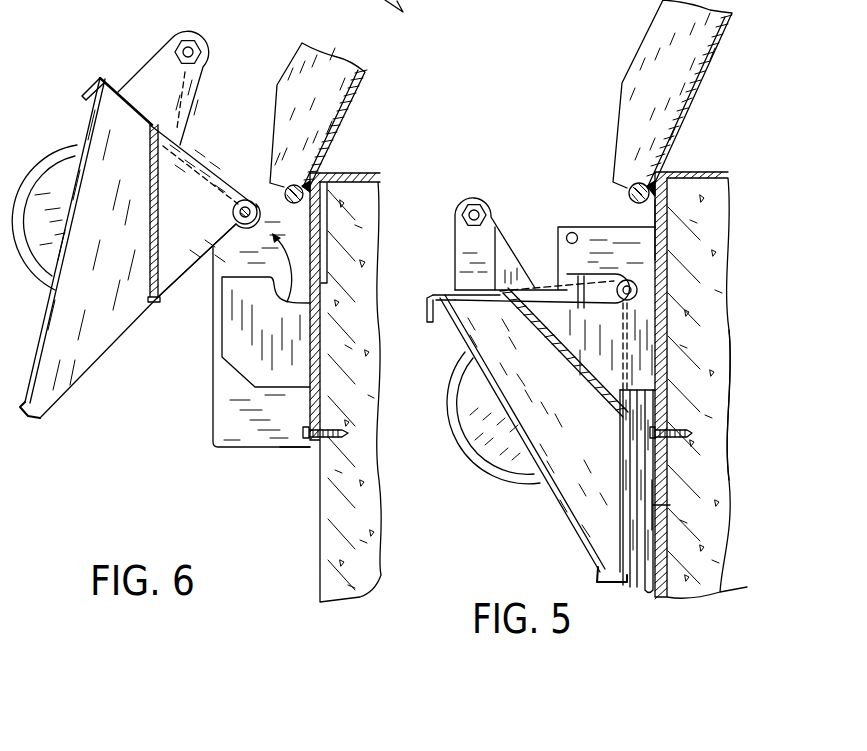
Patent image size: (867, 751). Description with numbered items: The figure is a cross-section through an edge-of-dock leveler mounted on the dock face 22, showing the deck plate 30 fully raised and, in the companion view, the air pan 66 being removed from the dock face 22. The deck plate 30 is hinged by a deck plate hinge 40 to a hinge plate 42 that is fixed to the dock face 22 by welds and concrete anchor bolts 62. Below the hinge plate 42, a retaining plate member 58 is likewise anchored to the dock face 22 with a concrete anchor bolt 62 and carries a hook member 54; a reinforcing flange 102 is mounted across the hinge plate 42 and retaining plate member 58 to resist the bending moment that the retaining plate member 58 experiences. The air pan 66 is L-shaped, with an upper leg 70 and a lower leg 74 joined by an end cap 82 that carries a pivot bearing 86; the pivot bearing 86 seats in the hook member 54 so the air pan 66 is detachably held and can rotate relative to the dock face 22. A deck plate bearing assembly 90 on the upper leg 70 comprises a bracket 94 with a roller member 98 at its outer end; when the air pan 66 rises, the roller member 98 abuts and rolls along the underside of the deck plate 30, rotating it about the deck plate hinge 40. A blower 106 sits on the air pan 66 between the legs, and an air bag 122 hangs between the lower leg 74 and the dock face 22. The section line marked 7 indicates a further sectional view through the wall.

In FIG. 6, the dock face 22 is at (320, 558).
In FIG. 5, the dock face 22 is at (733, 578).
In FIG. 6, the deck plate 30 is at (357, 97).
In FIG. 5, the deck plate 30 is at (706, 79).
In FIG. 6, the deck plate hinge 40 is at (303, 184).
In FIG. 5, the deck plate hinge 40 is at (638, 182).
In FIG. 6, the hinge plate 42 is at (328, 218).
In FIG. 5, the hinge plate 42 is at (653, 220).
In FIG. 6, the hook member 54 is at (247, 358).
In FIG. 5, the hook member 54 is at (620, 390).
In FIG. 6, the retaining plate member 58 is at (298, 410).
In FIG. 5, the retaining plate member 58 is at (663, 365).
In FIG. 6, the concrete anchor bolt 62 is at (340, 433).
In FIG. 5, the concrete anchor bolt 62 is at (676, 425).
In FIG. 6, the air pan 66 is at (82, 398).
In FIG. 5, the air pan 66 is at (537, 500).
In FIG. 6, the upper leg 70 is at (195, 152).
In FIG. 5, the upper leg 70 is at (470, 292).
In FIG. 6, the lower leg 74 is at (128, 328).
In FIG. 5, the lower leg 74 is at (598, 543).
In FIG. 6, the end cap 82 is at (176, 262).
In FIG. 5, the end cap 82 is at (553, 274).
In FIG. 6, the pivot bearing 86 is at (246, 199).
In FIG. 5, the pivot bearing 86 is at (660, 290).
In FIG. 6, the deck plate bearing assembly 90 is at (142, 52).
In FIG. 5, the deck plate bearing assembly 90 is at (508, 209).
In FIG. 6, the bracket 94 is at (137, 90).
In FIG. 5, the bracket 94 is at (450, 292).
In FIG. 6, the roller member 98 is at (206, 46).
In FIG. 5, the roller member 98 is at (488, 198).
In FIG. 6, the reinforcing flange 102 is at (232, 433).
In FIG. 5, the reinforcing flange 102 is at (727, 248).
In FIG. 6, the blower 106 is at (78, 148).
In FIG. 5, the blower 106 is at (490, 438).
In FIG. 5, the air bag 122 is at (655, 505).
In FIG. 5, the section view indicator 7 is at (680, 182).